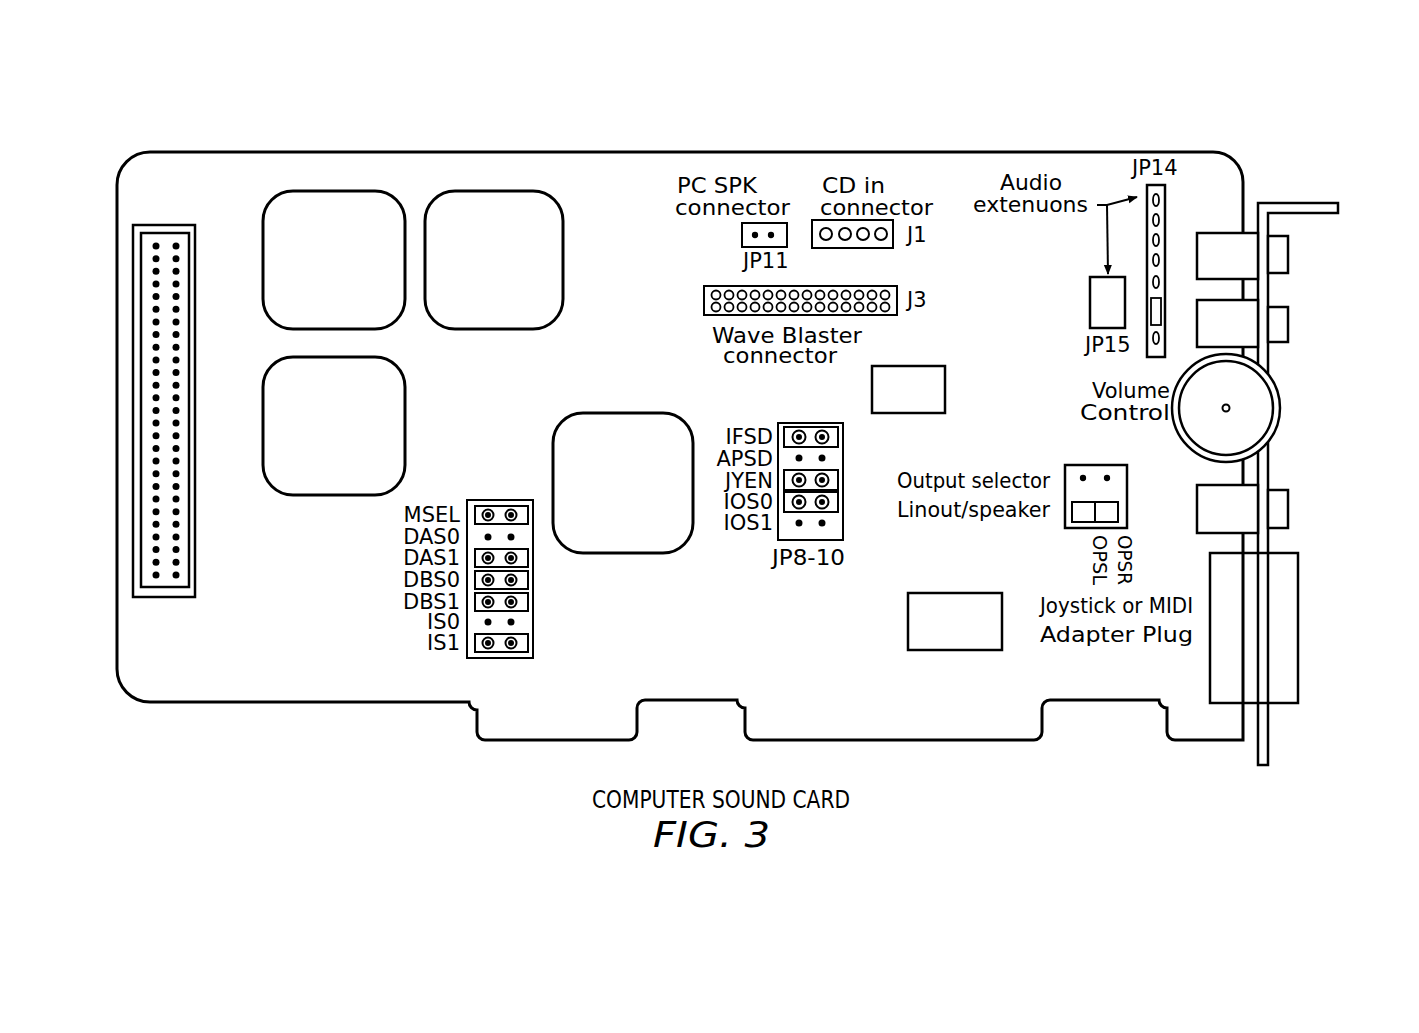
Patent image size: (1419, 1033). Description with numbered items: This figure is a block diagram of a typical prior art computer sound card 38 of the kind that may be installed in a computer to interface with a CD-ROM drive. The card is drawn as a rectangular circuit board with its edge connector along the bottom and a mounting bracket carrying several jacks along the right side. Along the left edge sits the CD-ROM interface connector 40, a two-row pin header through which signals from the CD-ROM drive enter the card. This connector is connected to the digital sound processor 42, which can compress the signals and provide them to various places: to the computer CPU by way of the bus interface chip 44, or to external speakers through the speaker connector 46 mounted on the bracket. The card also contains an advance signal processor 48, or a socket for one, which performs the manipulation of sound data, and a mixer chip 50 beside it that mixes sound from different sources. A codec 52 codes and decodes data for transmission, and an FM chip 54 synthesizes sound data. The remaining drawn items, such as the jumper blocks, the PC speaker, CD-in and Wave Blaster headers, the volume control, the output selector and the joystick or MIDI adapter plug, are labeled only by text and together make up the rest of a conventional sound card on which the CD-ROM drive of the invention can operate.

The sound card 38 is at (1041, 115).
The CD-ROM interface connector 40 is at (132, 325).
The digital sound processor 42 is at (298, 495).
The bus interface chip 44 is at (605, 553).
The speaker connector 46 is at (1248, 485).
The advance signal processor 48 is at (306, 191).
The mixer chip 50 is at (474, 191).
The codec 52 is at (882, 413).
The FM chip 54 is at (930, 650).